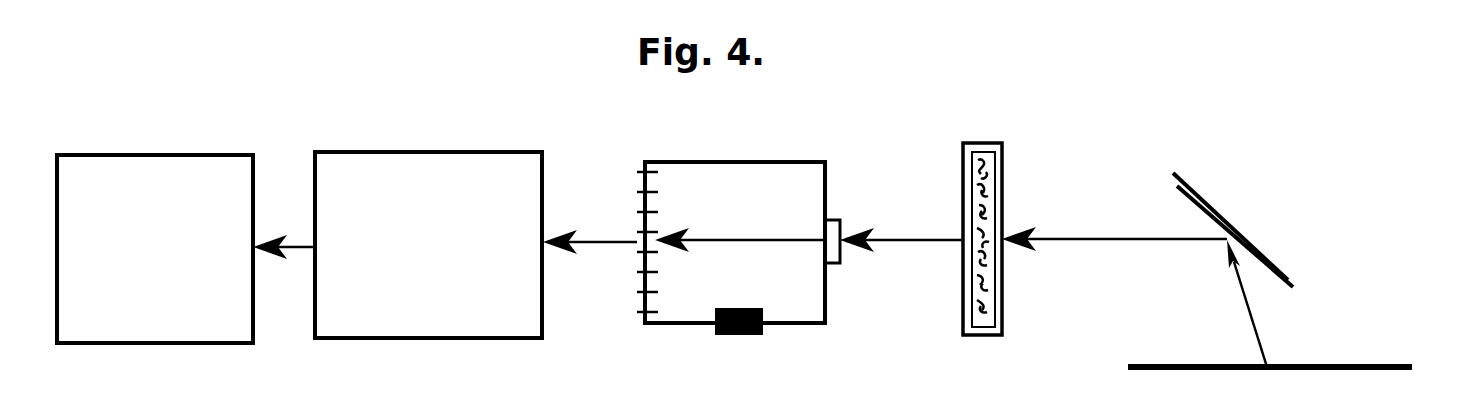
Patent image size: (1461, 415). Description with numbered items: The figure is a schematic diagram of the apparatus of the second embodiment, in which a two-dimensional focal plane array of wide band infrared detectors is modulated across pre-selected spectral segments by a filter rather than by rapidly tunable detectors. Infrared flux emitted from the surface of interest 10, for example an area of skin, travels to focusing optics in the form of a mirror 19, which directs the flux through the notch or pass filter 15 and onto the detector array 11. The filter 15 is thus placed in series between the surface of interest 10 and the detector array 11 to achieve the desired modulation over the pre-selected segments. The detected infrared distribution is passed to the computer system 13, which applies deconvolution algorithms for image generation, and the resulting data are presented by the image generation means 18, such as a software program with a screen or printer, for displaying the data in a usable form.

The surface of interest 10 is at (1358, 365).
The detector array 11 is at (776, 162).
The computer system 13 is at (412, 151).
The notch or pass filter 15 is at (992, 143).
The image generation means 18 is at (163, 153).
The mirror 19 is at (1213, 200).